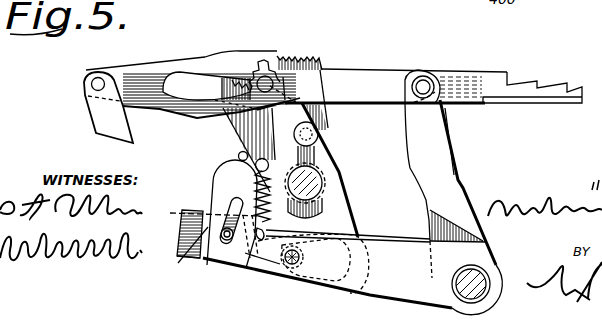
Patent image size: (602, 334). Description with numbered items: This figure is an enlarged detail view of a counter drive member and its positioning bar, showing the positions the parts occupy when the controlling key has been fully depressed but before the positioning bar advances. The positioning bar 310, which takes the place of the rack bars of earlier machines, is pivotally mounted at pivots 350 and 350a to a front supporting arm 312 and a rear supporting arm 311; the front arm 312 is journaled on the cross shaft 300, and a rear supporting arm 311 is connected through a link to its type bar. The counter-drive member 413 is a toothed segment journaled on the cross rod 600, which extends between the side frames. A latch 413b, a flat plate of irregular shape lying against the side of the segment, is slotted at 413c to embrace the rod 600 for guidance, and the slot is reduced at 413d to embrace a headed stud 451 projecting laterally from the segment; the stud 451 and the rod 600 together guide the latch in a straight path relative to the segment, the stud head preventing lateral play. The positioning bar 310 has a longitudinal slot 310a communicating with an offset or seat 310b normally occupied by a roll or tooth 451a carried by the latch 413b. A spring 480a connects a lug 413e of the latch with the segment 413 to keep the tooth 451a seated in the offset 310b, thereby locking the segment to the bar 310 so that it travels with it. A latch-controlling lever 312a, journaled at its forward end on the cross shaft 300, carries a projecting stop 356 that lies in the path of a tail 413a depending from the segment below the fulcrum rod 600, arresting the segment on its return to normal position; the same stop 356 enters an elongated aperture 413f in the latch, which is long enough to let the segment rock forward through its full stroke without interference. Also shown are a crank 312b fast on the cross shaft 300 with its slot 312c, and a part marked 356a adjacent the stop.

The cross shaft 300 is at (460, 283).
The positioning bar 310 is at (367, 71).
The longitudinally extending slot 310a is at (191, 76).
The offset or seat 310b is at (265, 52).
The rear supporting arm 311 is at (135, 122).
The front supporting arm 312 is at (433, 150).
The latch-controlling lever 312a is at (192, 214).
The crank 312b is at (188, 258).
The slot 312c is at (233, 203).
The pivot 350 is at (432, 75).
The pivot 350a is at (100, 77).
The stop 356 is at (299, 283).
The pin 356a is at (243, 273).
The counter-drive member 413 is at (317, 62).
The tail 413a is at (270, 283).
The latch 413b is at (352, 225).
The slot 413c is at (324, 200).
The reduced slot portion 413d is at (308, 155).
The lug 413e is at (263, 268).
The elongated aperture 413f is at (350, 258).
The headed stud 451 is at (320, 129).
The roll or tooth 451a is at (312, 84).
The spring 480a is at (256, 163).
The cross rod 600 is at (316, 185).